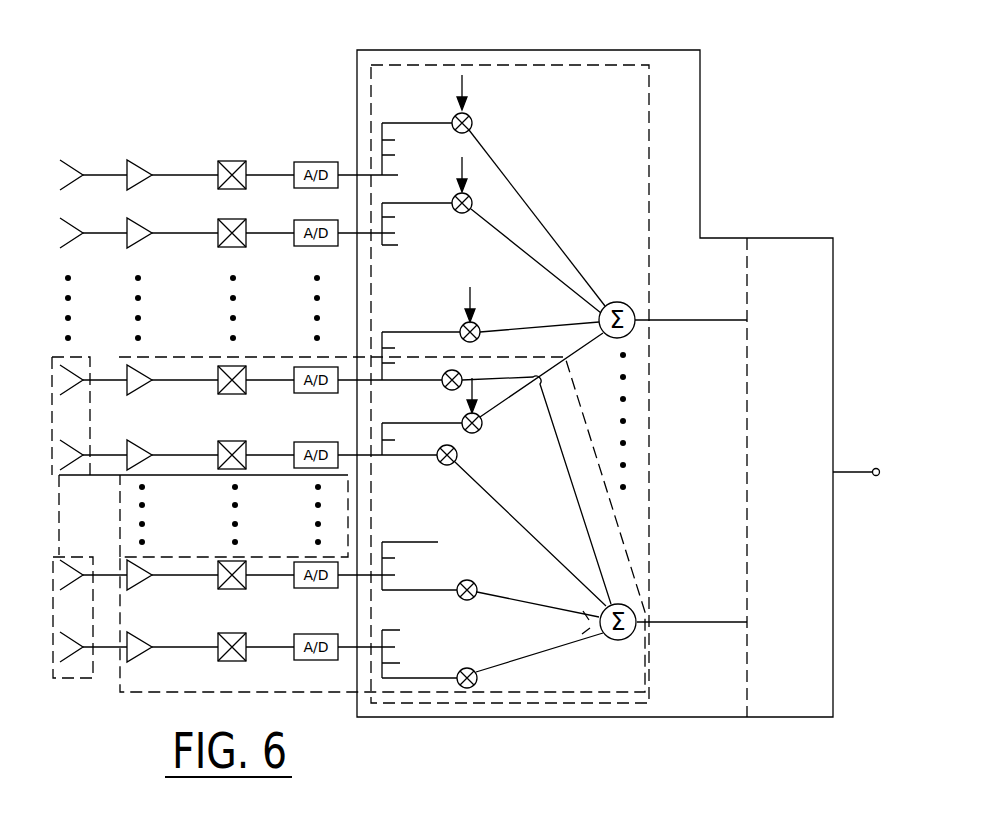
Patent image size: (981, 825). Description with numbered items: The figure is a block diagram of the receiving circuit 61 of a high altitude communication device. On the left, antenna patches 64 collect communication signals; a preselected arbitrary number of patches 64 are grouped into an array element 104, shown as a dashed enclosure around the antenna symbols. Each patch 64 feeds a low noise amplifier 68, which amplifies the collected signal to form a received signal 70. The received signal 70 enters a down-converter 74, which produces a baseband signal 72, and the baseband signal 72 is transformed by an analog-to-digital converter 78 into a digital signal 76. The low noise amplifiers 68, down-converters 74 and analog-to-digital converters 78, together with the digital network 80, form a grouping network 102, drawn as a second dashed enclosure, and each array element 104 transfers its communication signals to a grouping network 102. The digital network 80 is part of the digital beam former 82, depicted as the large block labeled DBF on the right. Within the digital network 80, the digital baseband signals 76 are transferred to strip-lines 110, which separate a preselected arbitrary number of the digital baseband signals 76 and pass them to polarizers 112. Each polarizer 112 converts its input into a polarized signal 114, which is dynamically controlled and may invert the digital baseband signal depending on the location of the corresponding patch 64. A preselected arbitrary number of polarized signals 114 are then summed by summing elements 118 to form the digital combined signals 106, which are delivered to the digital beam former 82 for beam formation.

The receiving circuit 61 is at (778, 88).
The patch 64 is at (70, 167).
The low noise amplifier 68 is at (138, 165).
The received signal 70 is at (178, 175).
The baseband signal 72 is at (257, 175).
The down-converter 74 is at (223, 160).
The digital signal 76 is at (344, 175).
The analog-to-digital converter 78 is at (298, 162).
The digital network 80 is at (648, 68).
The digital beam former 82 is at (702, 205).
The grouping network 102 is at (163, 355).
The array element 104 is at (52, 357).
The combined signal 106 is at (695, 318).
The strip-line 110 is at (381, 123).
The polarizer 112 is at (472, 117).
The polarized signal 114 is at (510, 180).
The summing element 118 is at (607, 302).